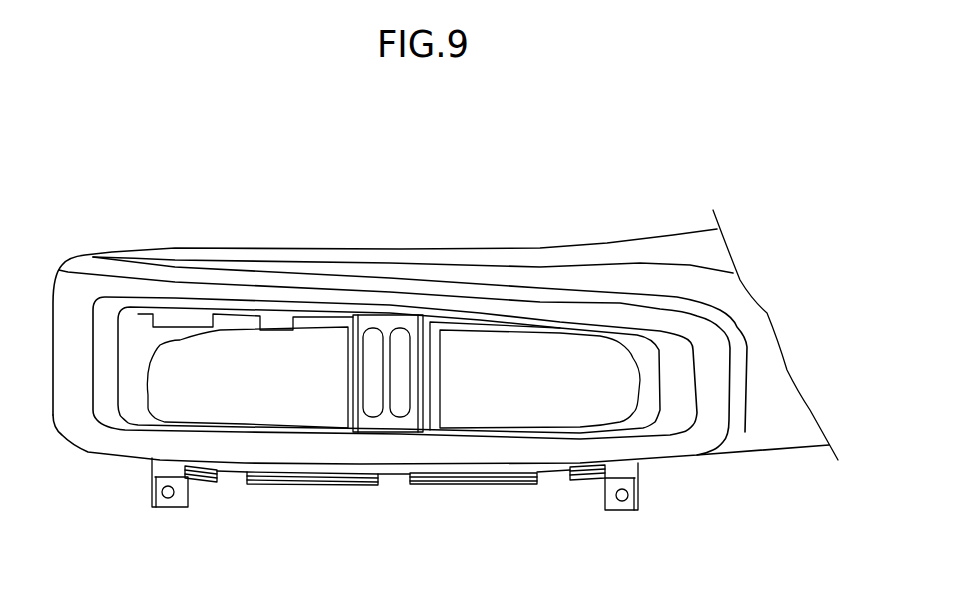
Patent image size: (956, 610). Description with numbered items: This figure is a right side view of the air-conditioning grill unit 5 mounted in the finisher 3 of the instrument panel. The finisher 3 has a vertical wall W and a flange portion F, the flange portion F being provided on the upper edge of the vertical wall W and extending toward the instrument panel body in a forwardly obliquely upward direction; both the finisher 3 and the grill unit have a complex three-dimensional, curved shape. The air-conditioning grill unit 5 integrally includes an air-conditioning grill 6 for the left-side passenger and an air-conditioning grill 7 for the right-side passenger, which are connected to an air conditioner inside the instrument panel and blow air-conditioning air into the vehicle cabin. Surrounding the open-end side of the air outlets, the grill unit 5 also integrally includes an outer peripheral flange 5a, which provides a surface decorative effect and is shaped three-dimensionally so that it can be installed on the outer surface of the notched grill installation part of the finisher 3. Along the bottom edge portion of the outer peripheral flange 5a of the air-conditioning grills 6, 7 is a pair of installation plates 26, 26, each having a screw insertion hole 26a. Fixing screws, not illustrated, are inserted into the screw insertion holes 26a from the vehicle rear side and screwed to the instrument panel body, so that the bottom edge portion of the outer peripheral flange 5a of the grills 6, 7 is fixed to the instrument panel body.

The finisher 3 is at (795, 180).
The flange portion F is at (571, 280).
The vertical wall W is at (762, 383).
The air-conditioning grill unit 5 is at (295, 168).
The outer peripheral flange 5a is at (125, 422).
The air-conditioning grill 6 is at (430, 330).
The air-conditioning grill 7 is at (306, 322).
The installation plate 26 is at (188, 490).
The screw insertion hole 26a is at (168, 498).